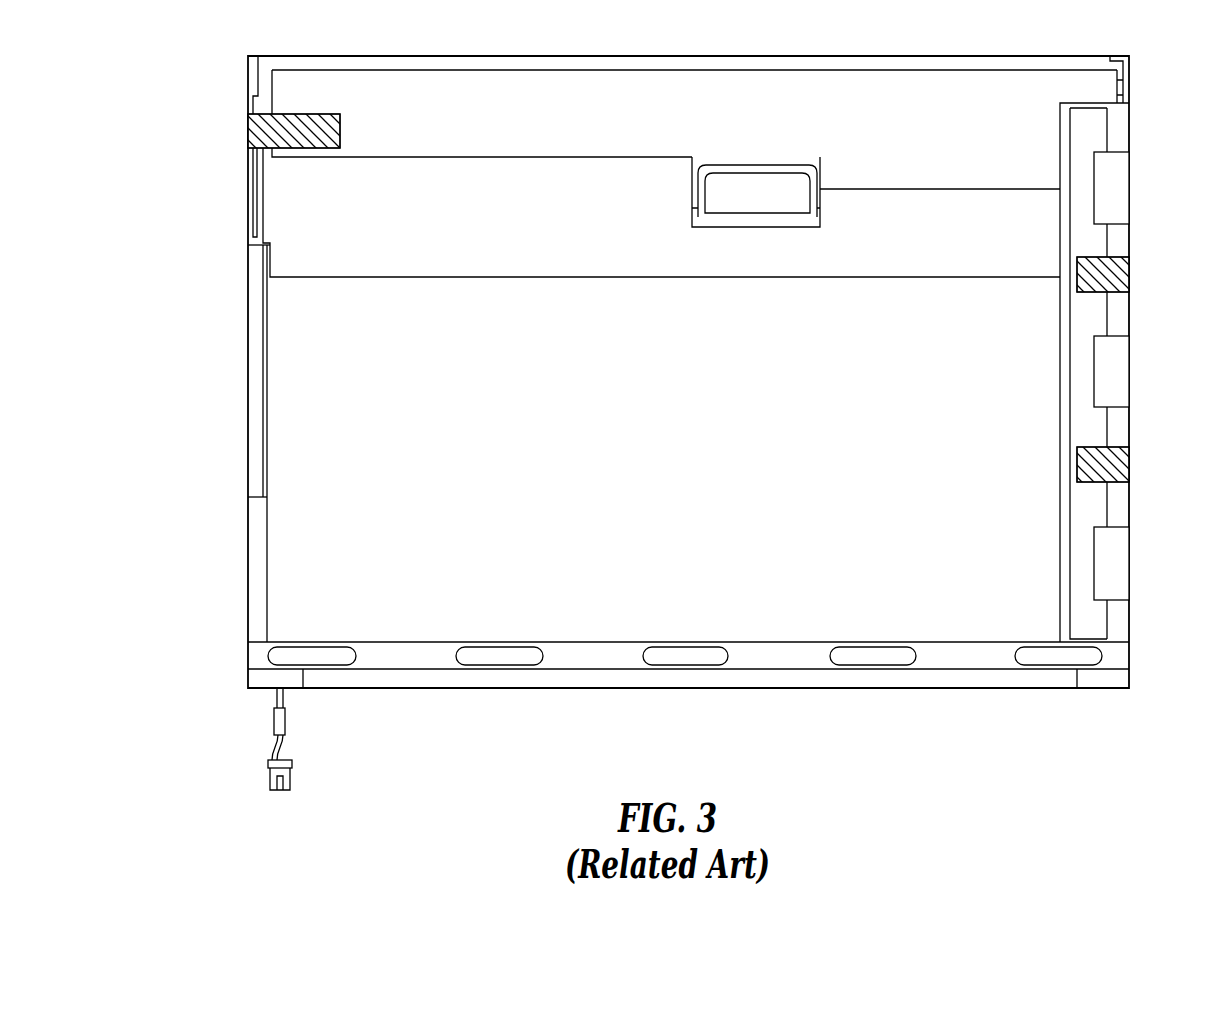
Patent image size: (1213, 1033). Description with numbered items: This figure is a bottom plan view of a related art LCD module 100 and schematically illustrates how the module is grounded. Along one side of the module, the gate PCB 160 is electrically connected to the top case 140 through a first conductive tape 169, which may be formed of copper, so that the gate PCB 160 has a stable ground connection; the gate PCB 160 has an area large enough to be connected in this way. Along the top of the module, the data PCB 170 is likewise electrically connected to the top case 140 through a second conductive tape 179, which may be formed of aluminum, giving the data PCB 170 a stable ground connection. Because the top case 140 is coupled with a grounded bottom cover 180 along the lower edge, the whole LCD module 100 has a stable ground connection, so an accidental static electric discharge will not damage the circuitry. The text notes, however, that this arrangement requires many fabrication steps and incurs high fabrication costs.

The LCD module 100 is at (226, 442).
The top case 140 is at (250, 192).
The gate PCB 160 is at (1095, 128).
The first conductive tape 169 is at (1115, 275).
The data PCB 170 is at (606, 88).
The second conductive tape 179 is at (253, 128).
The bottom cover 180 is at (781, 660).